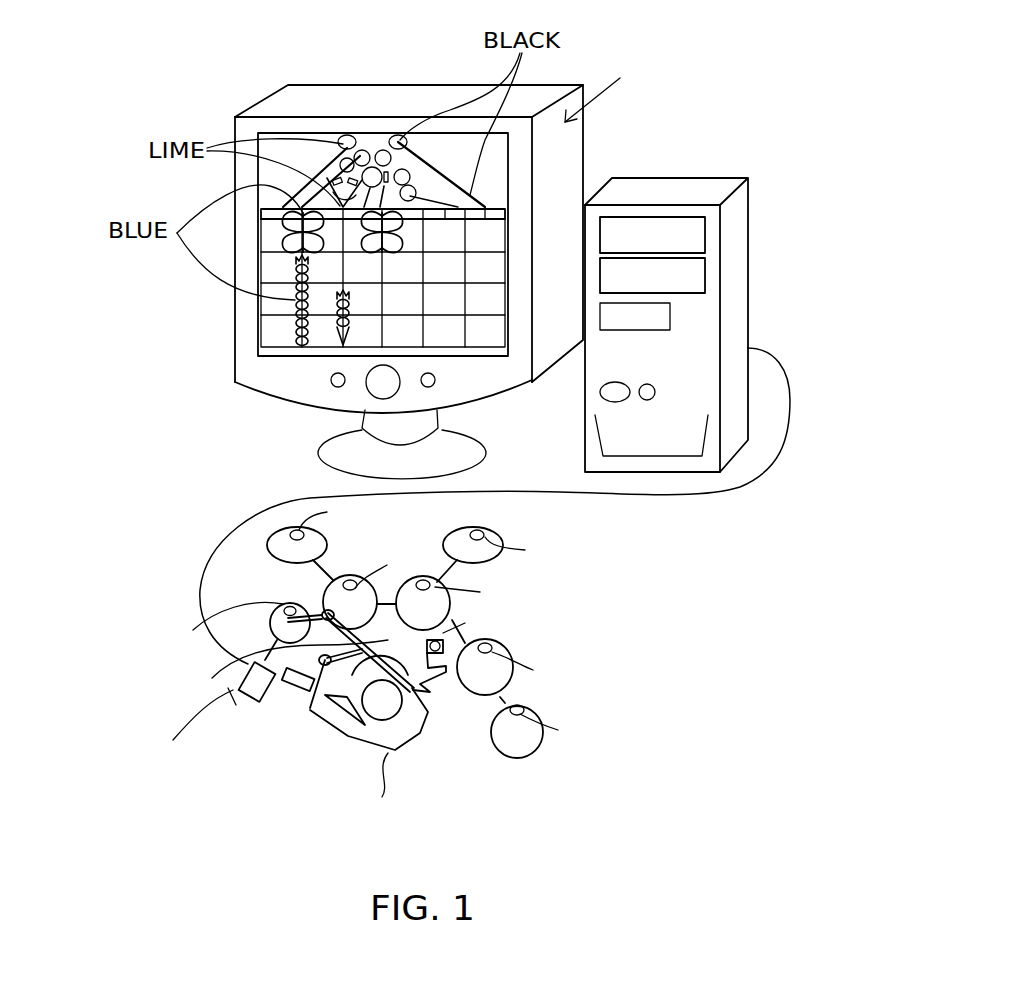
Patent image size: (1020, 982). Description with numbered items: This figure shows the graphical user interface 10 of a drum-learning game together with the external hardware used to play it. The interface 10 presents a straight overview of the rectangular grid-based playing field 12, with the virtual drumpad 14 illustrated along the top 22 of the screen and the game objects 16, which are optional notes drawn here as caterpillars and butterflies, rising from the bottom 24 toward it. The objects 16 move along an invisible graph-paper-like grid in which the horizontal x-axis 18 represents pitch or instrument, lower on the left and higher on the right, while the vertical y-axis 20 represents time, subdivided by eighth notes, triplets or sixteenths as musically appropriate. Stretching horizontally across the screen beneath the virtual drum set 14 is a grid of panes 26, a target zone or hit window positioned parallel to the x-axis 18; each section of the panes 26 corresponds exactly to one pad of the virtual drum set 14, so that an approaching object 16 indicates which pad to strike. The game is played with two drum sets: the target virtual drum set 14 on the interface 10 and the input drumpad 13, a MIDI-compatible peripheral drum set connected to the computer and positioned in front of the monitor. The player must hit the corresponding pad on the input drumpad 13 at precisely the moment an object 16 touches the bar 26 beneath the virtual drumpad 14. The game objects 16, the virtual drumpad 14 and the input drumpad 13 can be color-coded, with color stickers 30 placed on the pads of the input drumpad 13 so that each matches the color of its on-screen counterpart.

The graphical user interface 10 is at (373, 143).
The rectangular grid-based playing field 12 is at (447, 334).
The input drumpad 13 is at (653, 623).
The virtual drumpad 14 is at (378, 148).
The game objects 16 is at (300, 330).
The horizontal x-axis 18 is at (484, 282).
The vertical y-axis 20 is at (466, 237).
The top of the screen 22 is at (520, 148).
The bottom of the screen 24 is at (513, 327).
The grid of panes 26 is at (258, 213).
The color stickers 30 is at (485, 653).